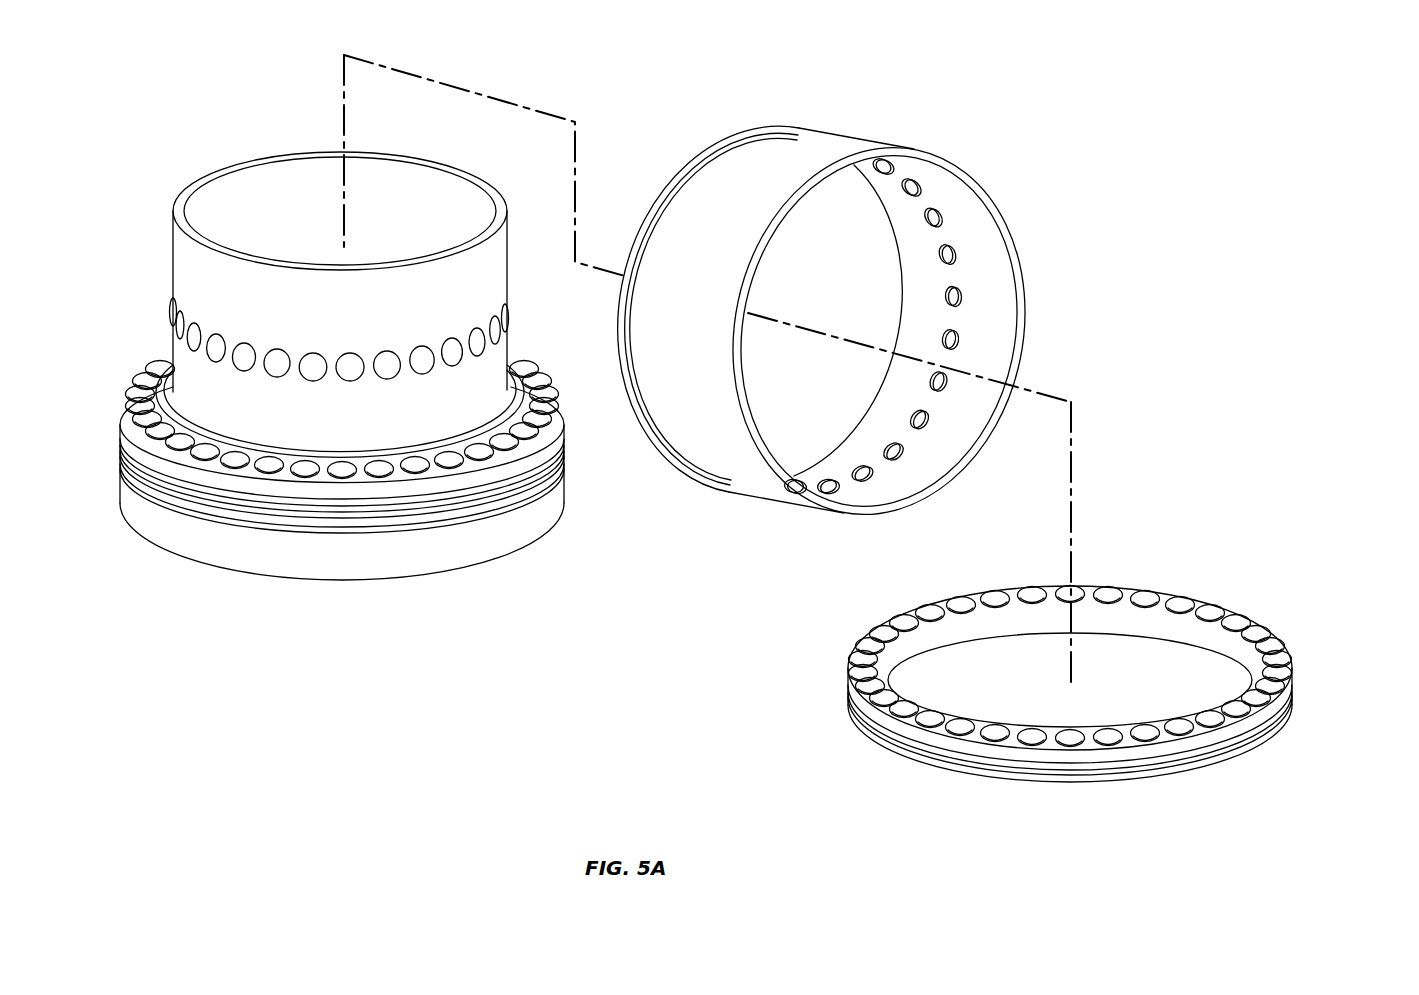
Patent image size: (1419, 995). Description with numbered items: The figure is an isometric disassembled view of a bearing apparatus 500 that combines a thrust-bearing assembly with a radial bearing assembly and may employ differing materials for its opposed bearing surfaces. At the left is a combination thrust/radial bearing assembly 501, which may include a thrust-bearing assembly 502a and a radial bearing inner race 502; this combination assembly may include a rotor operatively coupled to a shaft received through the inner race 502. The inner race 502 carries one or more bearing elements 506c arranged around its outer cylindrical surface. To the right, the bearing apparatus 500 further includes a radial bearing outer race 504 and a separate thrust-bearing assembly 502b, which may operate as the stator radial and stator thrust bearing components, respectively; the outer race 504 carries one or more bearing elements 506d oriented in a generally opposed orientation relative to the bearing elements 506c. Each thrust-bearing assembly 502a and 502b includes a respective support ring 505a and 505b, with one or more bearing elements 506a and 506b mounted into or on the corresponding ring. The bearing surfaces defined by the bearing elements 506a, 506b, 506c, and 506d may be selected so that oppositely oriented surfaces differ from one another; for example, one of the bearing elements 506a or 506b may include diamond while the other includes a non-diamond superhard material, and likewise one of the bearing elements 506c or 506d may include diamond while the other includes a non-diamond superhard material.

The bearing apparatus 500 is at (137, 120).
The combination thrust/radial bearing assembly 501 is at (146, 343).
The radial bearing inner race 502 is at (178, 259).
The thrust-bearing assembly 502a is at (112, 406).
The thrust-bearing assembly 502b is at (1320, 678).
The radial bearing outer race 504 is at (998, 308).
The support ring 505a is at (130, 434).
The support ring 505b is at (1148, 752).
The bearing elements 506a is at (540, 388).
The bearing elements 506b is at (1282, 652).
The bearing elements 506c is at (387, 364).
The bearing elements 506d is at (940, 339).